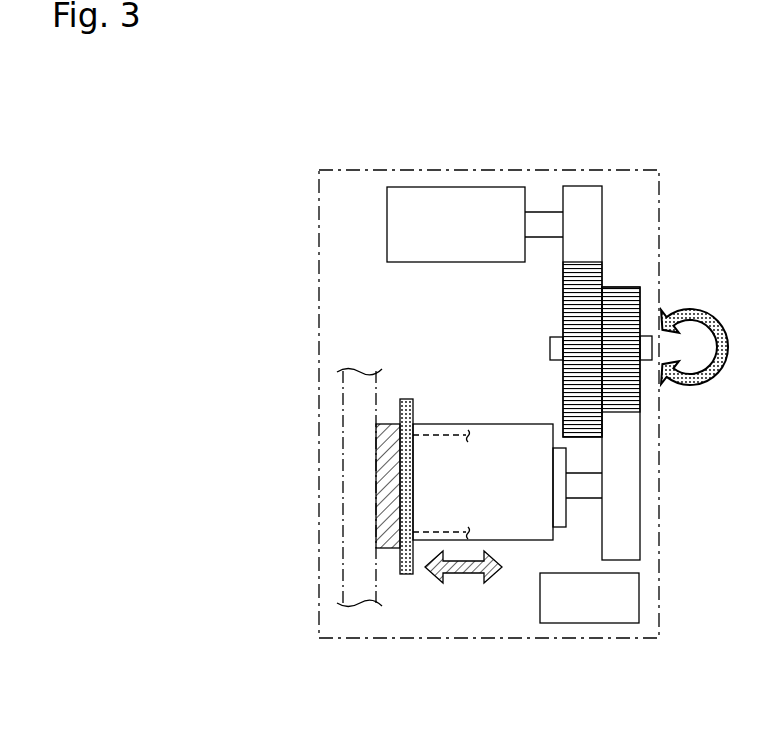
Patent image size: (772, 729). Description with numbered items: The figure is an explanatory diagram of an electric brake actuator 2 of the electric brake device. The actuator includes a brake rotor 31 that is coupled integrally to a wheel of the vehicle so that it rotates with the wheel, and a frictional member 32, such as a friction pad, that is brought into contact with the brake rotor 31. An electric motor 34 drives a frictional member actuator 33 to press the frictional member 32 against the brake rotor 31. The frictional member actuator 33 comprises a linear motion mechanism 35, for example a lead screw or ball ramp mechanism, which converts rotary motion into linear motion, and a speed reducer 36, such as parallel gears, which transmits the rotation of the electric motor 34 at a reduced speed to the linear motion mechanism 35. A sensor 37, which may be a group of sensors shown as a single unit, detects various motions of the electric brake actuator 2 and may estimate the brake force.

The electric brake actuator 2 is at (316, 238).
The brake rotor 31 is at (353, 392).
The frictional member 32 is at (388, 545).
The frictional member actuator 33 is at (385, 112).
The electric motor 34 is at (477, 262).
The linear motion mechanism 35 is at (443, 424).
The speed reducer 36 is at (622, 262).
The sensor 37 is at (594, 623).